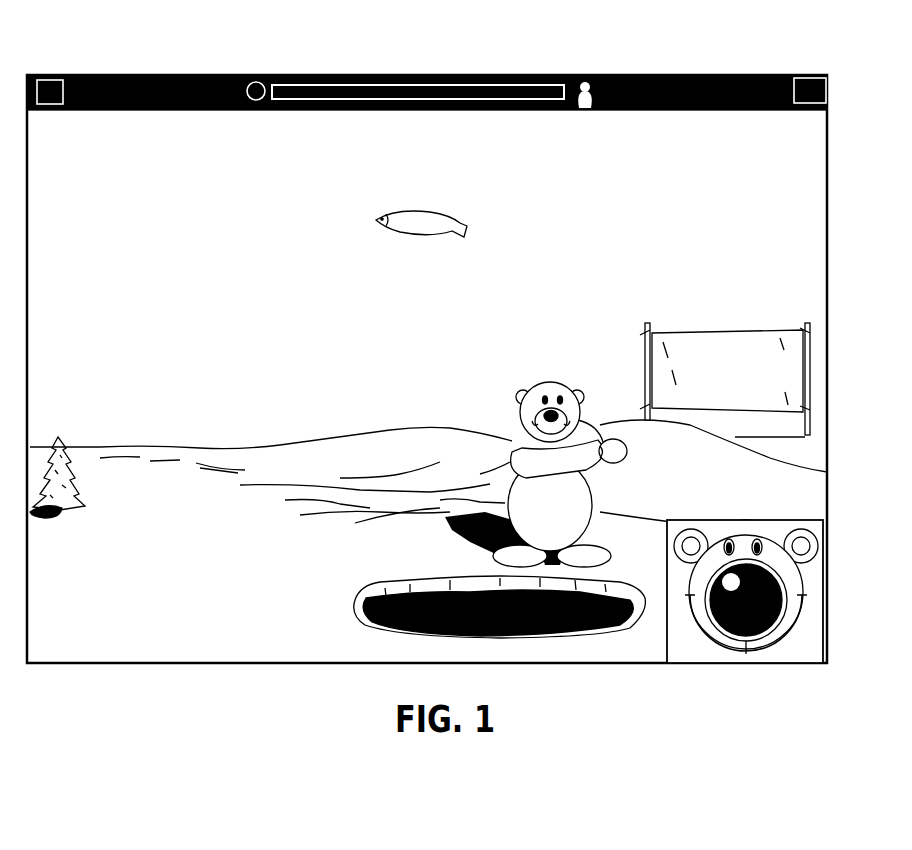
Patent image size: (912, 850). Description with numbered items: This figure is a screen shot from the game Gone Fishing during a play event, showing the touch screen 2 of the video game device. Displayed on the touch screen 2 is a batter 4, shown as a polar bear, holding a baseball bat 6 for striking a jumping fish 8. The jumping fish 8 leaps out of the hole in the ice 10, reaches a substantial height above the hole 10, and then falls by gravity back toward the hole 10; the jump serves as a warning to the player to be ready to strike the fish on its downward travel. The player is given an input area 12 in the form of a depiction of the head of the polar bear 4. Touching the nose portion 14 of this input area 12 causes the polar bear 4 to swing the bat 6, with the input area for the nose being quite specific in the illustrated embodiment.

The touch screen 2 is at (653, 66).
The batter 4 is at (498, 450).
The baseball bat 6 is at (571, 382).
The jumping fish 8 is at (445, 211).
The hole in the ice 10 is at (344, 606).
The input area 12 is at (772, 645).
The nose portion 14 is at (717, 630).